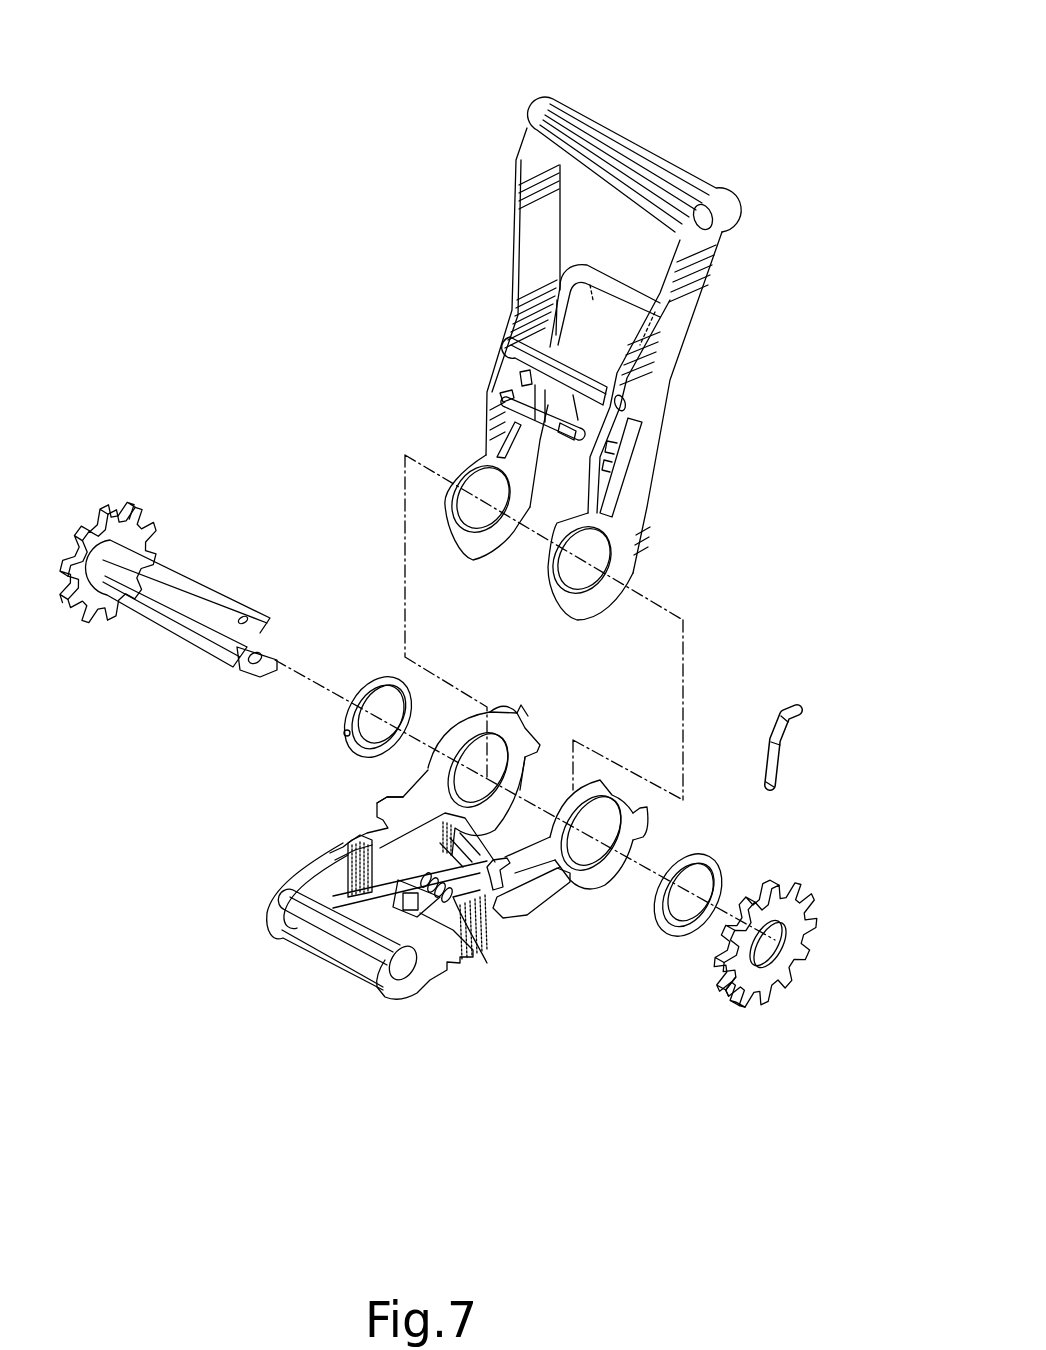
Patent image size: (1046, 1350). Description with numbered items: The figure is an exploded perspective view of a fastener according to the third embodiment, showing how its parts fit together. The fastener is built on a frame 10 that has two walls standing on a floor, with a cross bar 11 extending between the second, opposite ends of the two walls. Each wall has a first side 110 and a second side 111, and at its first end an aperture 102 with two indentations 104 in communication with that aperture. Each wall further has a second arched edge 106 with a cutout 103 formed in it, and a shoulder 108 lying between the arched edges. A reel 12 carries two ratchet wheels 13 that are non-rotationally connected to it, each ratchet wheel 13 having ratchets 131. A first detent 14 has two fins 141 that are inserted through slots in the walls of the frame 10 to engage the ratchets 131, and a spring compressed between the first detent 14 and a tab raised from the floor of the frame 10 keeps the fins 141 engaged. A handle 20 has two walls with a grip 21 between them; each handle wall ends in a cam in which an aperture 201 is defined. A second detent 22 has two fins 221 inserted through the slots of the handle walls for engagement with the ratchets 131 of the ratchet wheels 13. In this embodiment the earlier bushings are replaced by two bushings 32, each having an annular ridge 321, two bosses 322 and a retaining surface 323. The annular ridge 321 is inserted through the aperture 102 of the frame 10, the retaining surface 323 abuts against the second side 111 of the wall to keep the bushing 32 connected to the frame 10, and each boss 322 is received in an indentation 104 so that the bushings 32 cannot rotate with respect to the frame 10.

The frame 10 is at (267, 886).
The cross bar 11 is at (347, 940).
The reel 12 is at (185, 610).
The ratchet wheels 13 is at (780, 980).
The ratchets 131 is at (733, 990).
The first detent 14 is at (487, 963).
The fins 141 is at (520, 902).
The handle 20 is at (686, 129).
The grip 21 is at (623, 132).
The second detent 22 is at (590, 418).
The fins 221 is at (617, 480).
The aperture 201 is at (587, 540).
The bushings 32 is at (663, 943).
The annular ridge 321 is at (360, 693).
The bosses 322 is at (345, 735).
The retaining surface 323 is at (700, 860).
The aperture 102 is at (487, 778).
The cutout 103 is at (512, 777).
The indentations 104 is at (380, 796).
The second arched edge 106 is at (530, 752).
The shoulder 108 is at (513, 713).
The first side 110 is at (510, 775).
The second side 111 is at (580, 887).